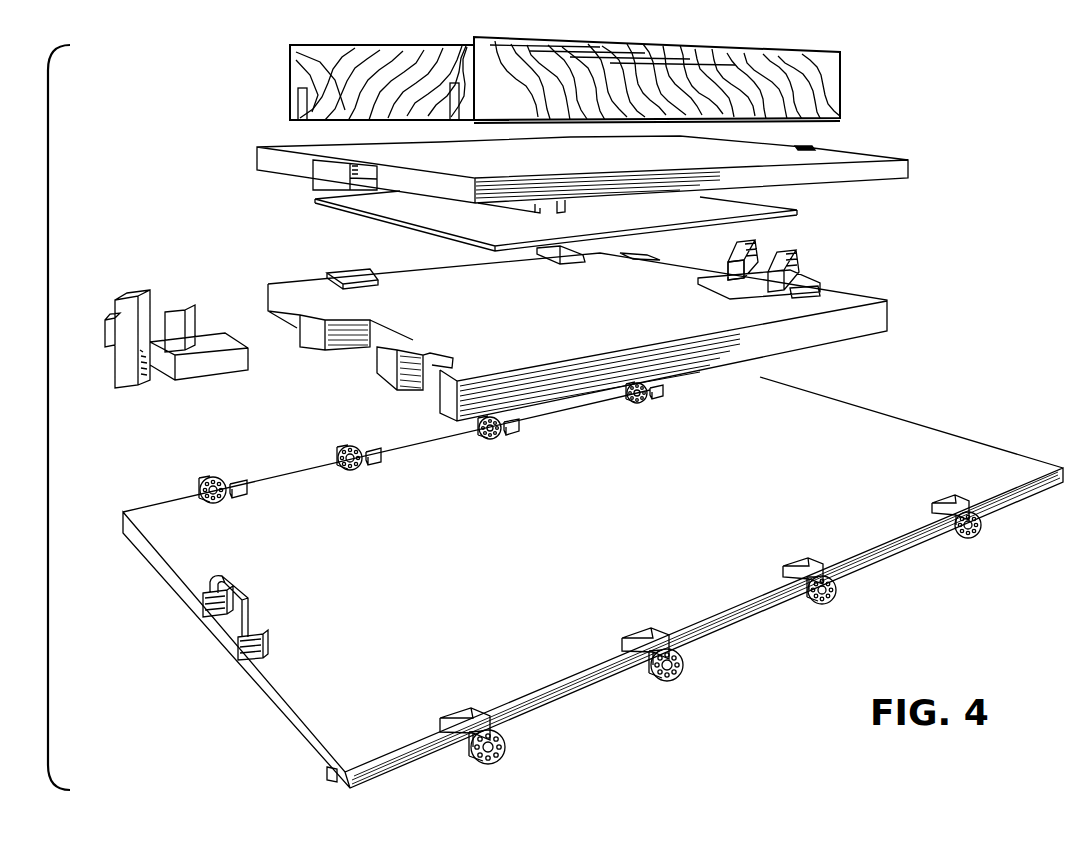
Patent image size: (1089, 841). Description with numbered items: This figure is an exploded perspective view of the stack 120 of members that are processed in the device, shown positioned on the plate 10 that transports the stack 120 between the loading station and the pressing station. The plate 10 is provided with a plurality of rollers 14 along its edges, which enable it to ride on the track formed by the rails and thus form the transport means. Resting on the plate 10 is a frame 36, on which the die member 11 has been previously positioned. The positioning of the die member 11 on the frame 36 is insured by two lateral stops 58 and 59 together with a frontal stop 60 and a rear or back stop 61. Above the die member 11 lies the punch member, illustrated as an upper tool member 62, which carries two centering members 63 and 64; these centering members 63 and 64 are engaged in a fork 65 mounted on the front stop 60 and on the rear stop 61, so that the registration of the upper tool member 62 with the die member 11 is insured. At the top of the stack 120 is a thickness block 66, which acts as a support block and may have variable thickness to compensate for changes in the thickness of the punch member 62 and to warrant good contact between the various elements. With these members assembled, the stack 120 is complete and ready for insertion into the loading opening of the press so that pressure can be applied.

The plate 10 is at (930, 445).
The die member 11 is at (320, 204).
The rollers 14 is at (226, 480).
The frame 36 is at (892, 318).
The lateral stop 58 is at (362, 252).
The lateral stop 59 is at (590, 252).
The frontal stop 60 is at (128, 380).
The rear stop 61 is at (813, 259).
The upper tool member 62 is at (910, 163).
The centering member 63 is at (325, 180).
The centering member 64 is at (812, 147).
The fork 65 is at (752, 246).
The thickness block 66 is at (812, 78).
The stack 120 is at (876, 200).